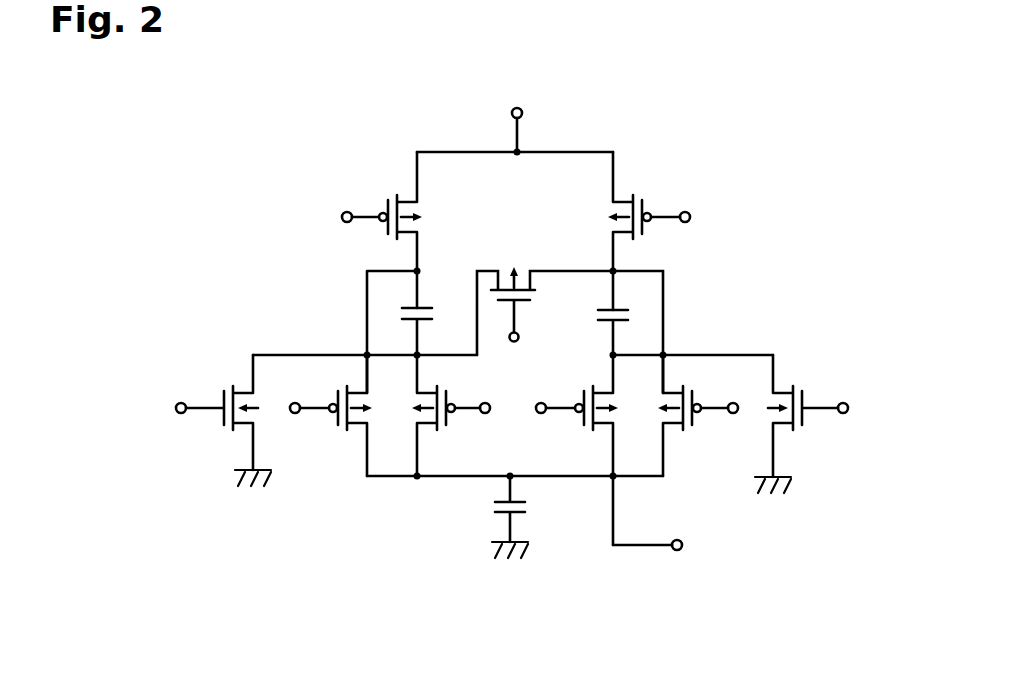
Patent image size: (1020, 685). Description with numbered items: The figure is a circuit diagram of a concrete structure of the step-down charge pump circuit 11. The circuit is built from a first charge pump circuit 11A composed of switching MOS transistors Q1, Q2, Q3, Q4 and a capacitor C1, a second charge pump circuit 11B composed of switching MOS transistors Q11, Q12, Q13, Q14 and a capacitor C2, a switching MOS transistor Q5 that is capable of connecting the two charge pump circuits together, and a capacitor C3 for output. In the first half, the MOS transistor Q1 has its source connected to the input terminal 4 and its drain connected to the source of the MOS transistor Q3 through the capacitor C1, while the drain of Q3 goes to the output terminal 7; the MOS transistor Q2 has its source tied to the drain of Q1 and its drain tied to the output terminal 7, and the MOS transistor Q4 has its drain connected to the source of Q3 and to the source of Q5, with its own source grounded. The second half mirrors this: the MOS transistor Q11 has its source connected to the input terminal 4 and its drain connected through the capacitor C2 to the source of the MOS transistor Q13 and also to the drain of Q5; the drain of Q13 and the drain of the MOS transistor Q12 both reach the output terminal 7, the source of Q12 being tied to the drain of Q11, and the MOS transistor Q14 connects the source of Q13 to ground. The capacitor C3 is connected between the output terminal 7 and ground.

The input terminal 4 is at (512, 114).
The output terminal 7 is at (677, 539).
The step-down charge pump circuit 11 is at (582, 135).
The first charge pump circuit 11A is at (346, 295).
The second capacitor switching section 11B is at (683, 300).
The MOS transistor Q1 is at (395, 230).
The MOS transistor Q2 is at (331, 415).
The MOS transistor Q3 is at (451, 415).
The MOS transistor Q4 is at (223, 420).
The switching MOS transistor Q5 is at (545, 301).
The MOS transistor Q11 is at (634, 231).
The MOS transistor Q12 is at (698, 415).
The MOS transistor Q13 is at (577, 450).
The MOS transistor Q14 is at (801, 424).
The capacitor C1 is at (429, 331).
The capacitor C2 is at (625, 332).
The capacitor for output C3 is at (522, 517).